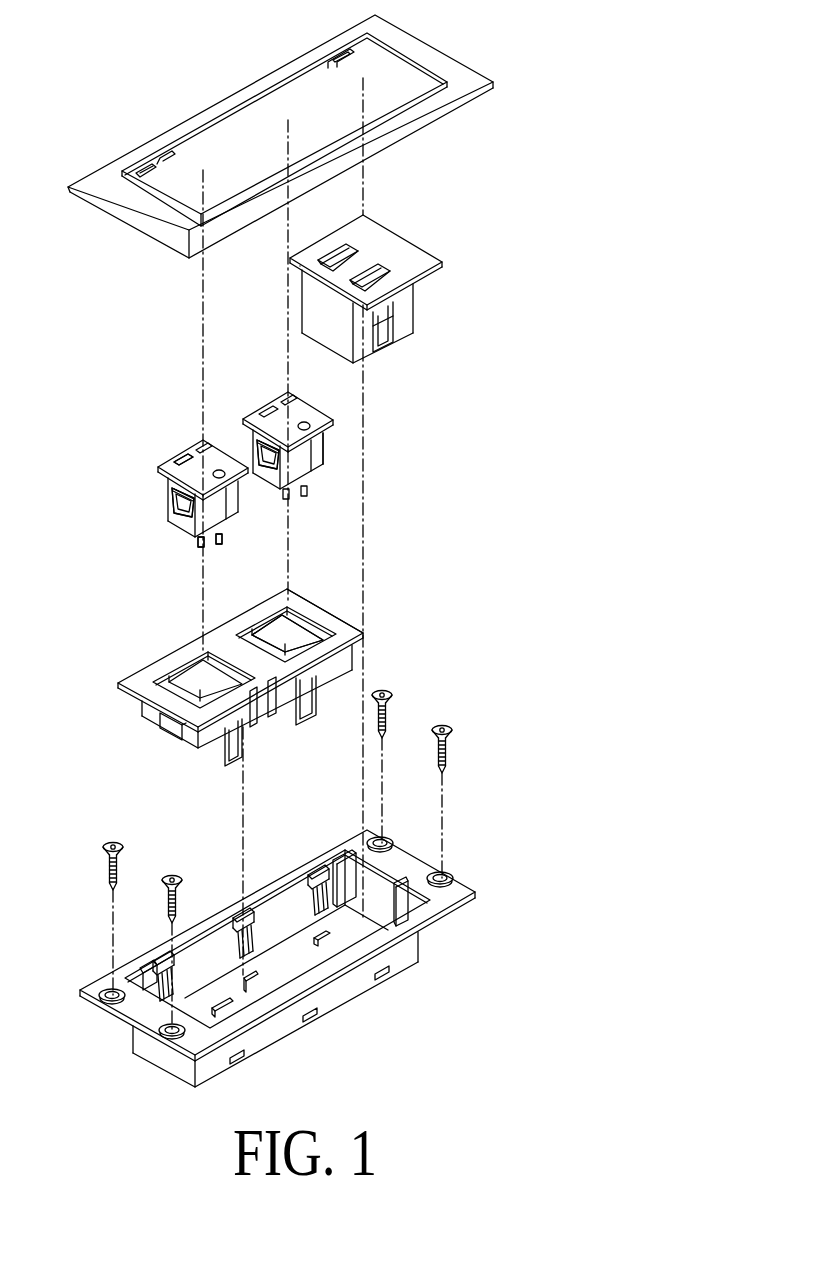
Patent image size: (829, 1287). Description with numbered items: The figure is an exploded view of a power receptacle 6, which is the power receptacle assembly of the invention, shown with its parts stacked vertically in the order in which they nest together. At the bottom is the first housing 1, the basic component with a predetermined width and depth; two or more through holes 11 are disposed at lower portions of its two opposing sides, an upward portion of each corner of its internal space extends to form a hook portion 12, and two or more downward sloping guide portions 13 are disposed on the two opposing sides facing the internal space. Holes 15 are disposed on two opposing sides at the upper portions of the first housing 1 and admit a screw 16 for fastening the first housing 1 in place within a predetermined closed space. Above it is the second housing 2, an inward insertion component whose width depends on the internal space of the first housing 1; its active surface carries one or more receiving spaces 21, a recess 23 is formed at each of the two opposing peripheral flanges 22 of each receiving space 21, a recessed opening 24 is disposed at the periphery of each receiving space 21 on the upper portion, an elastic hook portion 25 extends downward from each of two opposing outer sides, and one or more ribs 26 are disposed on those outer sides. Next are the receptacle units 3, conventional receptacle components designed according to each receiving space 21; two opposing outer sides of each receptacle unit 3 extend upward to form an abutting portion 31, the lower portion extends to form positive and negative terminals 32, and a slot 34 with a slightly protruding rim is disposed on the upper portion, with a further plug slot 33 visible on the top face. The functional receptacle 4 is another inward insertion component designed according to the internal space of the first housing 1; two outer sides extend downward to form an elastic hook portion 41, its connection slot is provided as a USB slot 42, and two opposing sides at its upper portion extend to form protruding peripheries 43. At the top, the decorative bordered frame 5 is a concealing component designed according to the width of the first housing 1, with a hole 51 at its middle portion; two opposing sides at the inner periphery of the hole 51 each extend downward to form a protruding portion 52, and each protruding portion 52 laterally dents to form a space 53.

The first housing 1 is at (455, 940).
The through holes 11 is at (385, 982).
The hook portion 12 is at (411, 900).
The downward sloping guide portions 13 is at (193, 967).
The holes 15 is at (448, 876).
The screw 16 is at (447, 757).
The second housing 2 is at (153, 657).
The receiving spaces 21 is at (172, 693).
The peripheral flanges 22 is at (287, 613).
The recess 23 is at (305, 633).
The recessed opening 24 is at (350, 623).
The hook portion 25 is at (310, 718).
The ribs 26 is at (272, 710).
The receptacle unit 3 is at (342, 467).
The abutting portion 31 is at (258, 443).
The positive and negative terminals 32 is at (219, 544).
The plug slots of power socket 33 is at (185, 455).
The slot 34 is at (332, 432).
The functional receptacle 4 is at (440, 325).
The hook portion 41 is at (385, 350).
The USB slot 42 is at (378, 260).
The protruding peripheries 43 is at (432, 268).
The decorative bordered frame 5 is at (440, 126).
The hole 51 is at (262, 125).
The protruding portion 52 is at (170, 157).
The space 53 is at (148, 178).
The power receptacle 6 is at (445, 541).